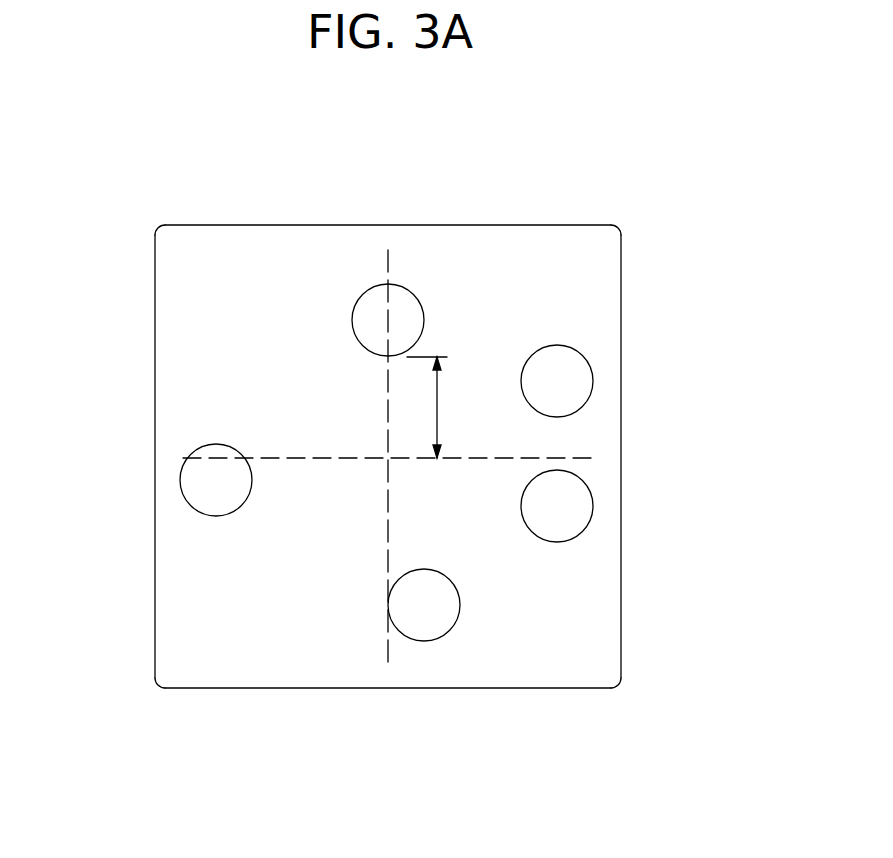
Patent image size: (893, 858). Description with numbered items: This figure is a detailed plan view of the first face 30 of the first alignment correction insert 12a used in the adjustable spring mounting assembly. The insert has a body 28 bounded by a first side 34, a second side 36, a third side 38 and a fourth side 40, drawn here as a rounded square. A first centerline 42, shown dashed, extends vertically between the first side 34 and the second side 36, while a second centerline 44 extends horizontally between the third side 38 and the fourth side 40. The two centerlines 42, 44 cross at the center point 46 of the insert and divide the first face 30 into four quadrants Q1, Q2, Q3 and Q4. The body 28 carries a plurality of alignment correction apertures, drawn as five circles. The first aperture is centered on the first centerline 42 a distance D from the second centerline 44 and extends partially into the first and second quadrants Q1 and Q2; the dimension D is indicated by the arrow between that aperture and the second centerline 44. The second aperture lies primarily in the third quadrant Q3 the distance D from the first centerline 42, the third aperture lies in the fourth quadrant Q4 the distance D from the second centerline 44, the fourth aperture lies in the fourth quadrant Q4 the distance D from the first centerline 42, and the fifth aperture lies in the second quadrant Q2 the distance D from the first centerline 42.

The first alignment correction insert 12a is at (622, 193).
The body 28 is at (617, 683).
The first face 30 is at (381, 448).
The first side 34 is at (462, 225).
The second side 36 is at (265, 688).
The third side 38 is at (155, 560).
The fourth side 40 is at (622, 435).
The first centerline 42 is at (388, 402).
The second centerline 44 is at (313, 458).
The center point 46 is at (390, 458).
The first quadrant Q1 is at (222, 265).
The second quadrant Q2 is at (563, 268).
The third quadrant Q3 is at (187, 662).
The fourth quadrant Q4 is at (592, 624).
The distance D is at (427, 407).